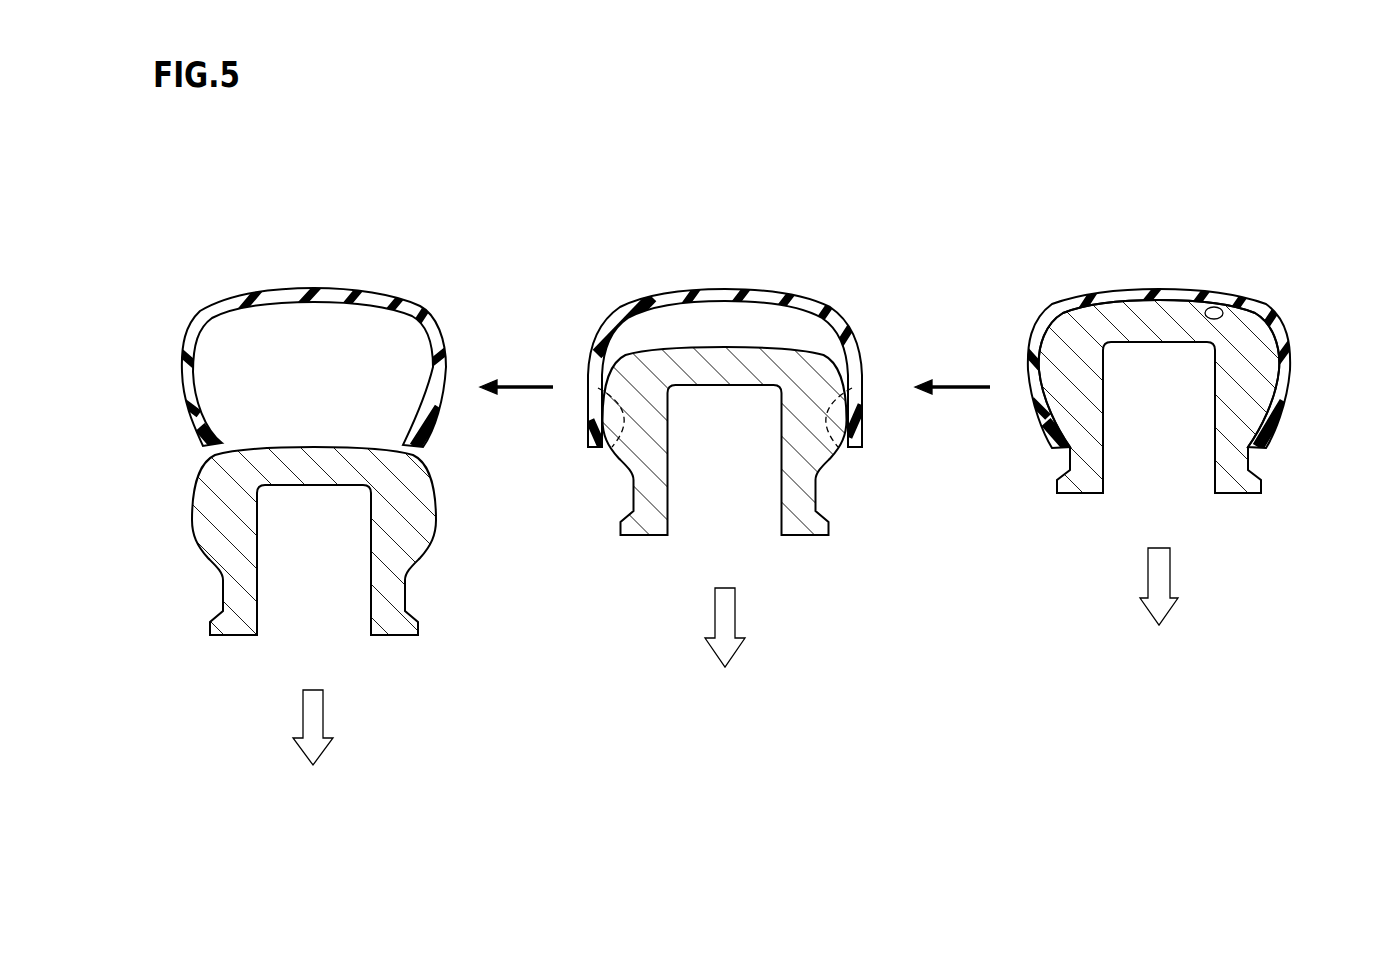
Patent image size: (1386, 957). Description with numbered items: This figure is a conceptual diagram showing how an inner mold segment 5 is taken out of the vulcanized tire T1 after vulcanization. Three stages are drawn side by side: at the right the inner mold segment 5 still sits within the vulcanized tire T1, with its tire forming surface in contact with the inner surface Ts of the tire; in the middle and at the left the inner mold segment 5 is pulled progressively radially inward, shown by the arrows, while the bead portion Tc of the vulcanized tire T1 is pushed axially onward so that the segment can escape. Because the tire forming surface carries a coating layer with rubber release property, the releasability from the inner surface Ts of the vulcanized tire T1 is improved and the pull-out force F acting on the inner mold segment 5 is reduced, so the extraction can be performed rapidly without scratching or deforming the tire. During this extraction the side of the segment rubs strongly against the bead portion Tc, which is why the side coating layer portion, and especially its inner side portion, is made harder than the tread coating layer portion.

The inner mold segment 5 is at (1090, 314).
The vulcanized tire T1 is at (1118, 300).
The inner surface of the vulcanized tire Ts is at (1212, 302).
The bead portion Tc is at (590, 412).
The pull-out force F is at (1170, 573).